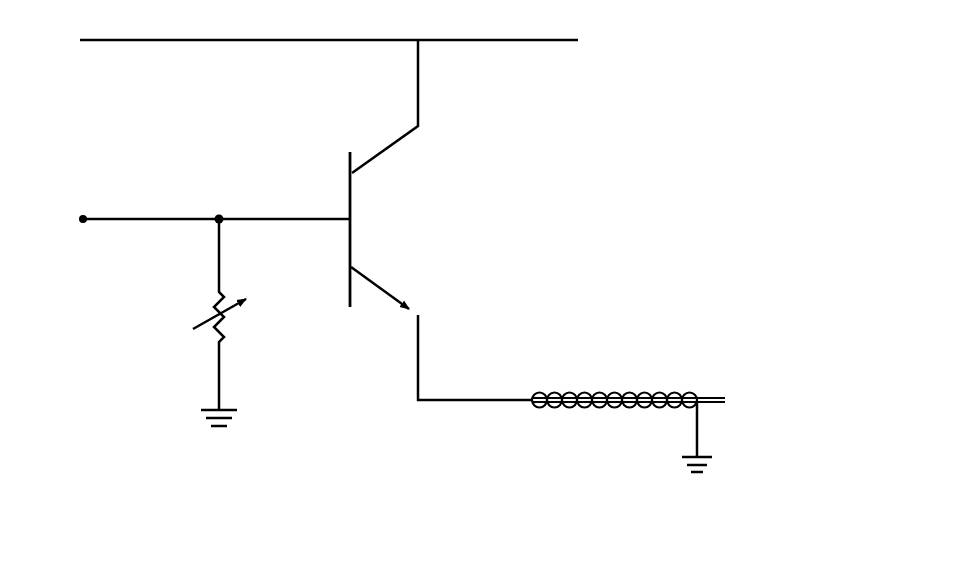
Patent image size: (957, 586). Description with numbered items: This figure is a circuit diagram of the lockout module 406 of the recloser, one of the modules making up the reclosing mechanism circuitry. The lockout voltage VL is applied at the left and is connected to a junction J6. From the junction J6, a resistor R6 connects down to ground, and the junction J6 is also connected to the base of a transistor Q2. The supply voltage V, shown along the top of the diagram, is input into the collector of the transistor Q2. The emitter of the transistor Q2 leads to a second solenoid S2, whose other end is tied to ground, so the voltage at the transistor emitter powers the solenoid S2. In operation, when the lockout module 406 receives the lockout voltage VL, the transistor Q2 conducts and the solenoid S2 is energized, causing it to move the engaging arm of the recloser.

The lockout module 406 is at (672, 146).
The voltage V is at (329, 25).
The lockout voltage VL is at (210, 201).
The junction J6 is at (215, 200).
The transistor Q2 is at (441, 220).
The resistor R6 is at (237, 322).
The second solenoid S2 is at (628, 415).